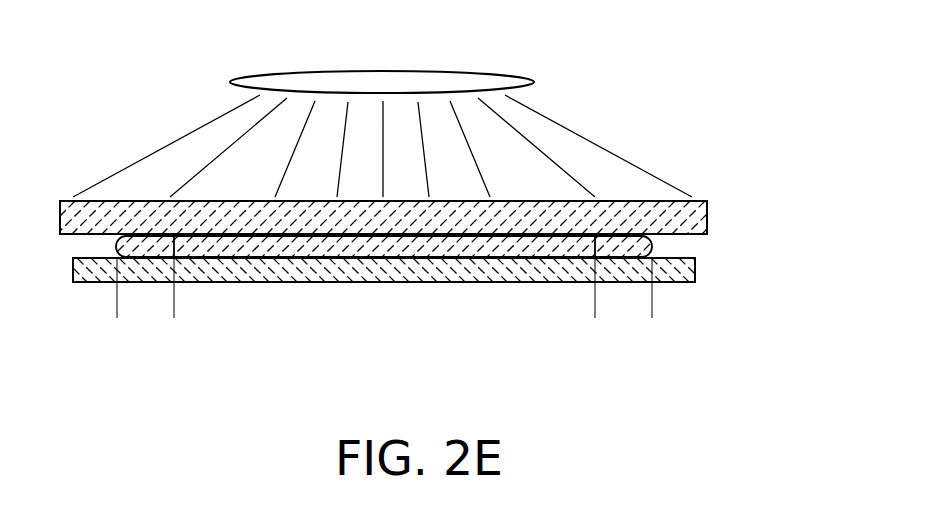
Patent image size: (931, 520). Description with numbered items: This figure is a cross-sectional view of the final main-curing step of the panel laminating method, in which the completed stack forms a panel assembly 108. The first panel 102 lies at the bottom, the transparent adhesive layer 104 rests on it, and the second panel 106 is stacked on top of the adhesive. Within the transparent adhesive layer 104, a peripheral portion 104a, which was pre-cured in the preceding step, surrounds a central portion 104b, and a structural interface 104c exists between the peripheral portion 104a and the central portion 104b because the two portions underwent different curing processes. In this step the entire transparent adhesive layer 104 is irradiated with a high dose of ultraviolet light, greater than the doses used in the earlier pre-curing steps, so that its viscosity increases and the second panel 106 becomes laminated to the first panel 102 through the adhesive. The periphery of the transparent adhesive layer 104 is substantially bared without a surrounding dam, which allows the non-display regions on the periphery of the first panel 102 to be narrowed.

The first panel 102 is at (682, 268).
The transparent adhesive layer 104 is at (643, 245).
The peripheral portion 104a is at (174, 316).
The central portion 104b is at (593, 316).
The structural interface 104c is at (175, 245).
The second panel 106 is at (702, 215).
The panel assembly 108 is at (660, 104).